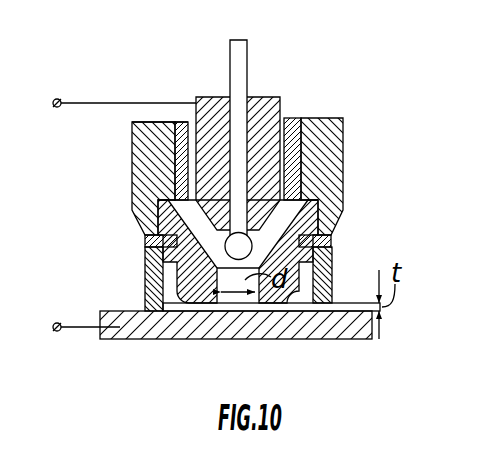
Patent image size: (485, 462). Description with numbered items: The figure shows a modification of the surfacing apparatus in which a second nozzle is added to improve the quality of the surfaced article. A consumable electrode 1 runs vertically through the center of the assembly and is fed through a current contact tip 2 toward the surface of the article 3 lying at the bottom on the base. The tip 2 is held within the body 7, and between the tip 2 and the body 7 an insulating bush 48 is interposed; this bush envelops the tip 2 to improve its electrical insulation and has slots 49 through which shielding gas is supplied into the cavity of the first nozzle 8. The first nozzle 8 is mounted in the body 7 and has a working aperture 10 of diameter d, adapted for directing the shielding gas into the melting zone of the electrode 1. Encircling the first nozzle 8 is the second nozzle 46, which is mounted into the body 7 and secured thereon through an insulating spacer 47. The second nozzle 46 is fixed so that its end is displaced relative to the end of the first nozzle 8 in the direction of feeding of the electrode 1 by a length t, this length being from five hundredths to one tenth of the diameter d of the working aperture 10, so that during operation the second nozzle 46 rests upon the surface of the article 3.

The consumable electrode 1 is at (238, 68).
The current contact tip 2 is at (266, 100).
The article 3 is at (143, 335).
The body 7 is at (140, 157).
The nozzle 8 is at (183, 279).
The working aperture 10 is at (218, 293).
The second nozzle 46 is at (328, 272).
The insulating spacer 47 is at (148, 238).
The insulating bush 48 is at (303, 151).
The slots 49 is at (292, 119).